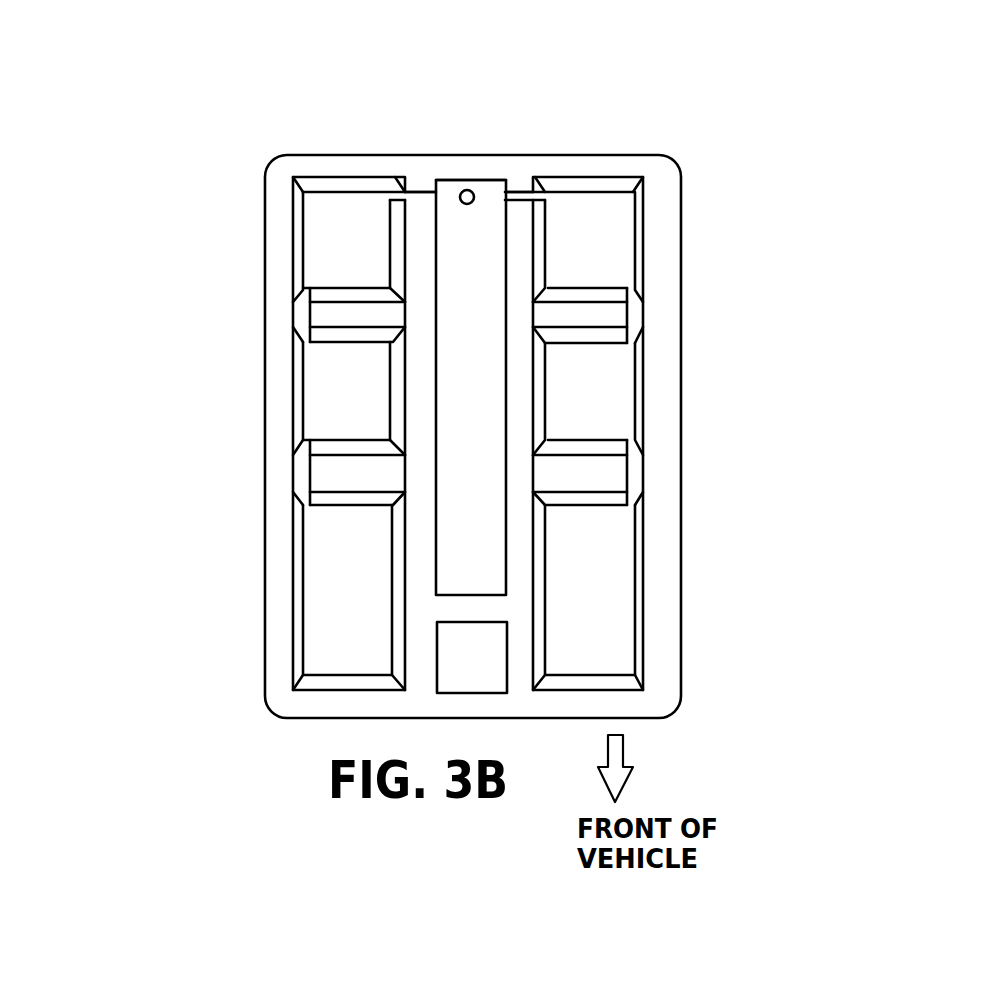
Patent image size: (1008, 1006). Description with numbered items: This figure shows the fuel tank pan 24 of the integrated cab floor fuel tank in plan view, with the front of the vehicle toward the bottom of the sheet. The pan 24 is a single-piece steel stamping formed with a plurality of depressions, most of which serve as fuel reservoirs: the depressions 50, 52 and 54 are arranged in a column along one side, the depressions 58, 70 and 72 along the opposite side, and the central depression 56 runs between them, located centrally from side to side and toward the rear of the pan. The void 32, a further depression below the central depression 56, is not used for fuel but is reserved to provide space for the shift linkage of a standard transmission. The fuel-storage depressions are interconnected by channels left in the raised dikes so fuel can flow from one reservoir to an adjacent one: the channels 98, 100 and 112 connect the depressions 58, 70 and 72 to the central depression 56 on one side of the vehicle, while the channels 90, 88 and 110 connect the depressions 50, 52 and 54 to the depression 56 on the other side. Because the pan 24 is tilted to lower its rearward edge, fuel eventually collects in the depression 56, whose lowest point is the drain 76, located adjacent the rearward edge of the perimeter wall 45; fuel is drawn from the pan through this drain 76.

The pan 24 is at (748, 150).
The void 32 is at (457, 671).
The perimeter wall 45 is at (497, 190).
The depression 50 is at (334, 601).
The depression 52 is at (332, 405).
The depression 54 is at (329, 250).
The depression 56 is at (456, 398).
The depression 58 is at (576, 621).
The depression 70 is at (572, 405).
The depression 72 is at (572, 250).
The drain 76 is at (465, 190).
The channel 88 is at (303, 315).
The channel 90 is at (303, 478).
The channel 98 is at (635, 470).
The channel 100 is at (635, 313).
The channel 110 is at (418, 192).
The channel 112 is at (518, 192).